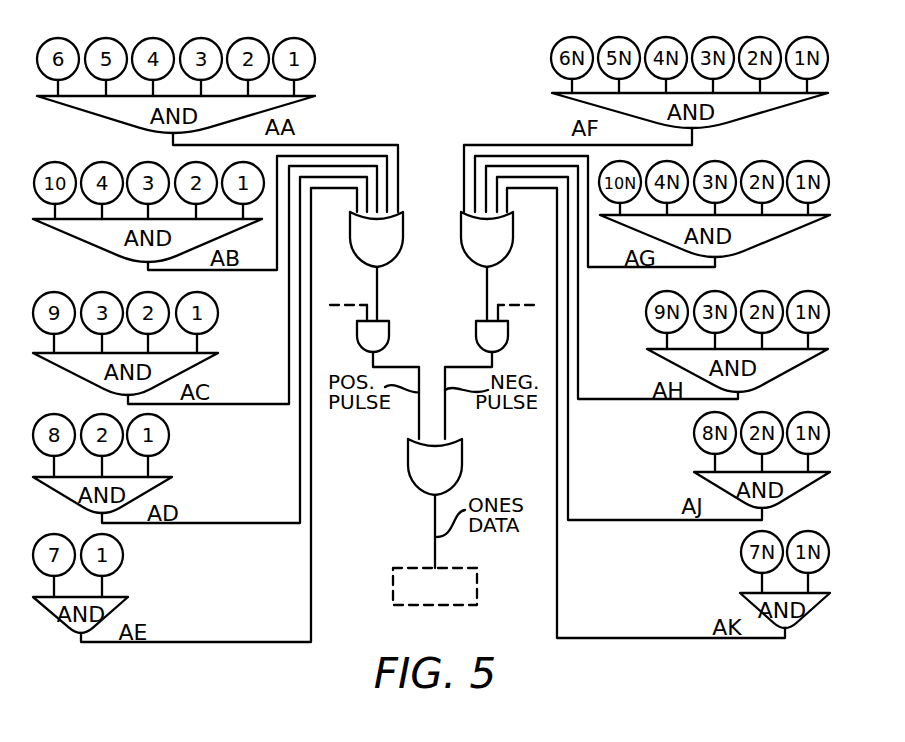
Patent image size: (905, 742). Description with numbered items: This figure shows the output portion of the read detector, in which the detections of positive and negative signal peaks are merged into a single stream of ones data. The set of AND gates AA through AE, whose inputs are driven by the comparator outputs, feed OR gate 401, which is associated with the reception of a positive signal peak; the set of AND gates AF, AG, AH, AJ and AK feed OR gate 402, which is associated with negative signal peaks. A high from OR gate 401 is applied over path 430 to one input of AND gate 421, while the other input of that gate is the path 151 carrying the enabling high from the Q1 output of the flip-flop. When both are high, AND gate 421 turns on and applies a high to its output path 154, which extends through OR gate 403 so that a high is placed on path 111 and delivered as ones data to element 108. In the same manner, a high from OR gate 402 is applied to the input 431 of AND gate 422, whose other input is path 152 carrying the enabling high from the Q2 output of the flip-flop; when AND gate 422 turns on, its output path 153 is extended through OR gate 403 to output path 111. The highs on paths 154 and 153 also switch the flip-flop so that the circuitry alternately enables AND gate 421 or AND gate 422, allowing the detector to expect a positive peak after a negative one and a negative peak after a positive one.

The OR gate 401 is at (383, 267).
The OR gate 402 is at (480, 254).
The OR gate 403 is at (416, 480).
The AND gate 421 is at (357, 340).
The AND gate 422 is at (508, 338).
The path 430 is at (377, 291).
The input 431 is at (487, 285).
The path 151 is at (353, 308).
The path 152 is at (535, 306).
The output path 154 is at (419, 424).
The output path 153 is at (445, 424).
The path 111 is at (436, 525).
The element 108 is at (393, 592).